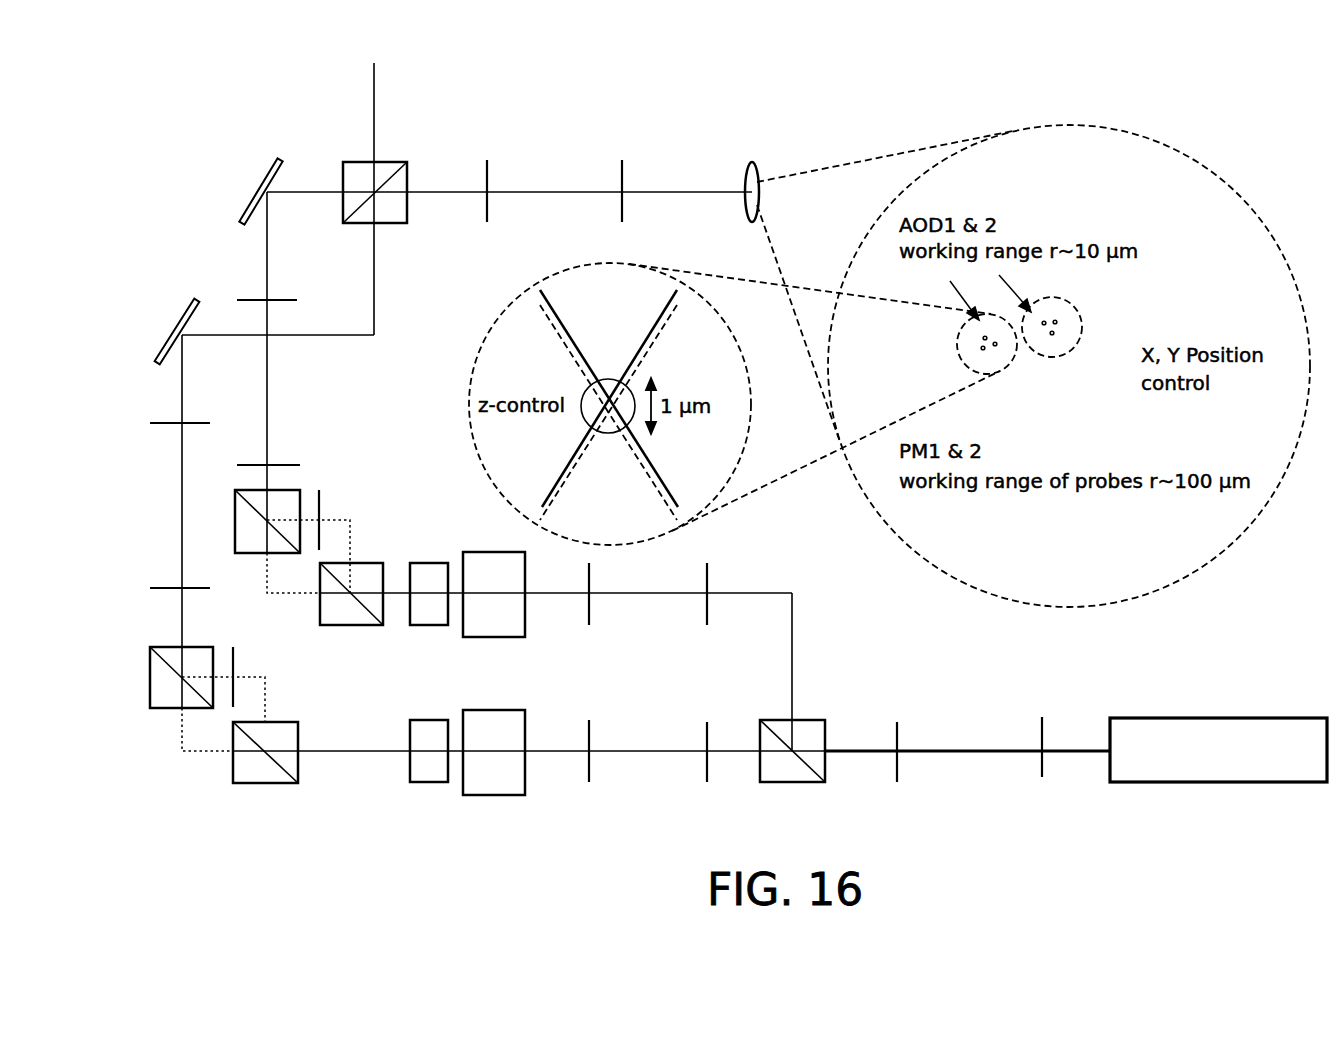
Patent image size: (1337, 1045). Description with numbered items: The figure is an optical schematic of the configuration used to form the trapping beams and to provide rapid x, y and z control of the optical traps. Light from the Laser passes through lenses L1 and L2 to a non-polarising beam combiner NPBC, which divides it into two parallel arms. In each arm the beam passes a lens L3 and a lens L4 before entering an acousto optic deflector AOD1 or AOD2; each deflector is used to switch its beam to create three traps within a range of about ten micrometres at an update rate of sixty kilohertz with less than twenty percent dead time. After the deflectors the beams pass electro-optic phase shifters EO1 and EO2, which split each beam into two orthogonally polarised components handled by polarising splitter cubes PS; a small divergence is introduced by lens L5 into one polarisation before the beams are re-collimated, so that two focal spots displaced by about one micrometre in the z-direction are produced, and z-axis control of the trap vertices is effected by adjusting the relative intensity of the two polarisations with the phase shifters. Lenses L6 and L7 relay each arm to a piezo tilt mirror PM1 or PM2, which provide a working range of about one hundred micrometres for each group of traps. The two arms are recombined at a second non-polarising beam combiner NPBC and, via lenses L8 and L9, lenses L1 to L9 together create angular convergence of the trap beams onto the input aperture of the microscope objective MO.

The piezo tilt mirror PM1 is at (244, 191).
The piezo tilt mirror PM2 is at (160, 332).
The non-polarising beam combiner NPBC is at (584, 475).
The polarising splitter PS is at (246, 655).
The electro-optic phase shifter EO1 is at (430, 612).
The electro-optic phase shifter EO2 is at (430, 771).
The acousto optic deflector AOD1 is at (492, 578).
The acousto optic deflector AOD2 is at (492, 737).
The microscope objective MO is at (751, 176).
The laser Laser is at (1218, 750).
The lens L1 is at (1041, 770).
The lens L2 is at (896, 774).
The lens L3 is at (706, 695).
The lens L4 is at (591, 695).
The lens L5 is at (290, 597).
The lens L6 is at (209, 527).
The lens L7 is at (207, 361).
The lens L8 is at (489, 210).
The lens L9 is at (623, 210).